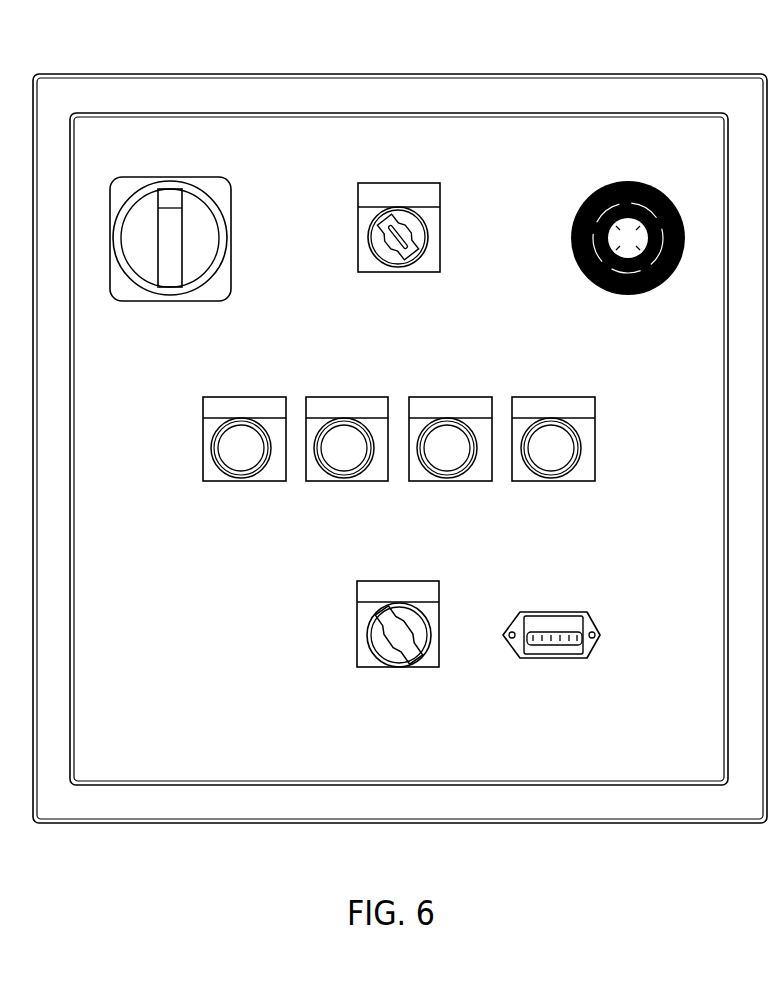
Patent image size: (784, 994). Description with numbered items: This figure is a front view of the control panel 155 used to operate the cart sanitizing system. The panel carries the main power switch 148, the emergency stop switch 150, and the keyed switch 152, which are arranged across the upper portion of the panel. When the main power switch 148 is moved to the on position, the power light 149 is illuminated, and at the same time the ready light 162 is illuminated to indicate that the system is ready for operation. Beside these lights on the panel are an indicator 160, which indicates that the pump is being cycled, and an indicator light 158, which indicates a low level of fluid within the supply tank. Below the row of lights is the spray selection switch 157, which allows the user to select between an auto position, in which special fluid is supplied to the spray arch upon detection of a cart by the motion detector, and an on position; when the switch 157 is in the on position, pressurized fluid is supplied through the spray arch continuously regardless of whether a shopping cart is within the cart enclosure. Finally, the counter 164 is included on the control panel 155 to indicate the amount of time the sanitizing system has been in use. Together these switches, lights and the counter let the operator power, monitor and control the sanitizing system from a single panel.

The control panel 155 is at (480, 75).
The main power switch 148 is at (232, 200).
The keyed switch 152 is at (425, 222).
The emergency stop switch 150 is at (574, 250).
The power light 149 is at (251, 427).
The ready light 162 is at (362, 422).
The indicator 160 is at (458, 425).
The indicator light 158 is at (562, 425).
The spray selection switch 157 is at (412, 581).
The counter 164 is at (562, 612).